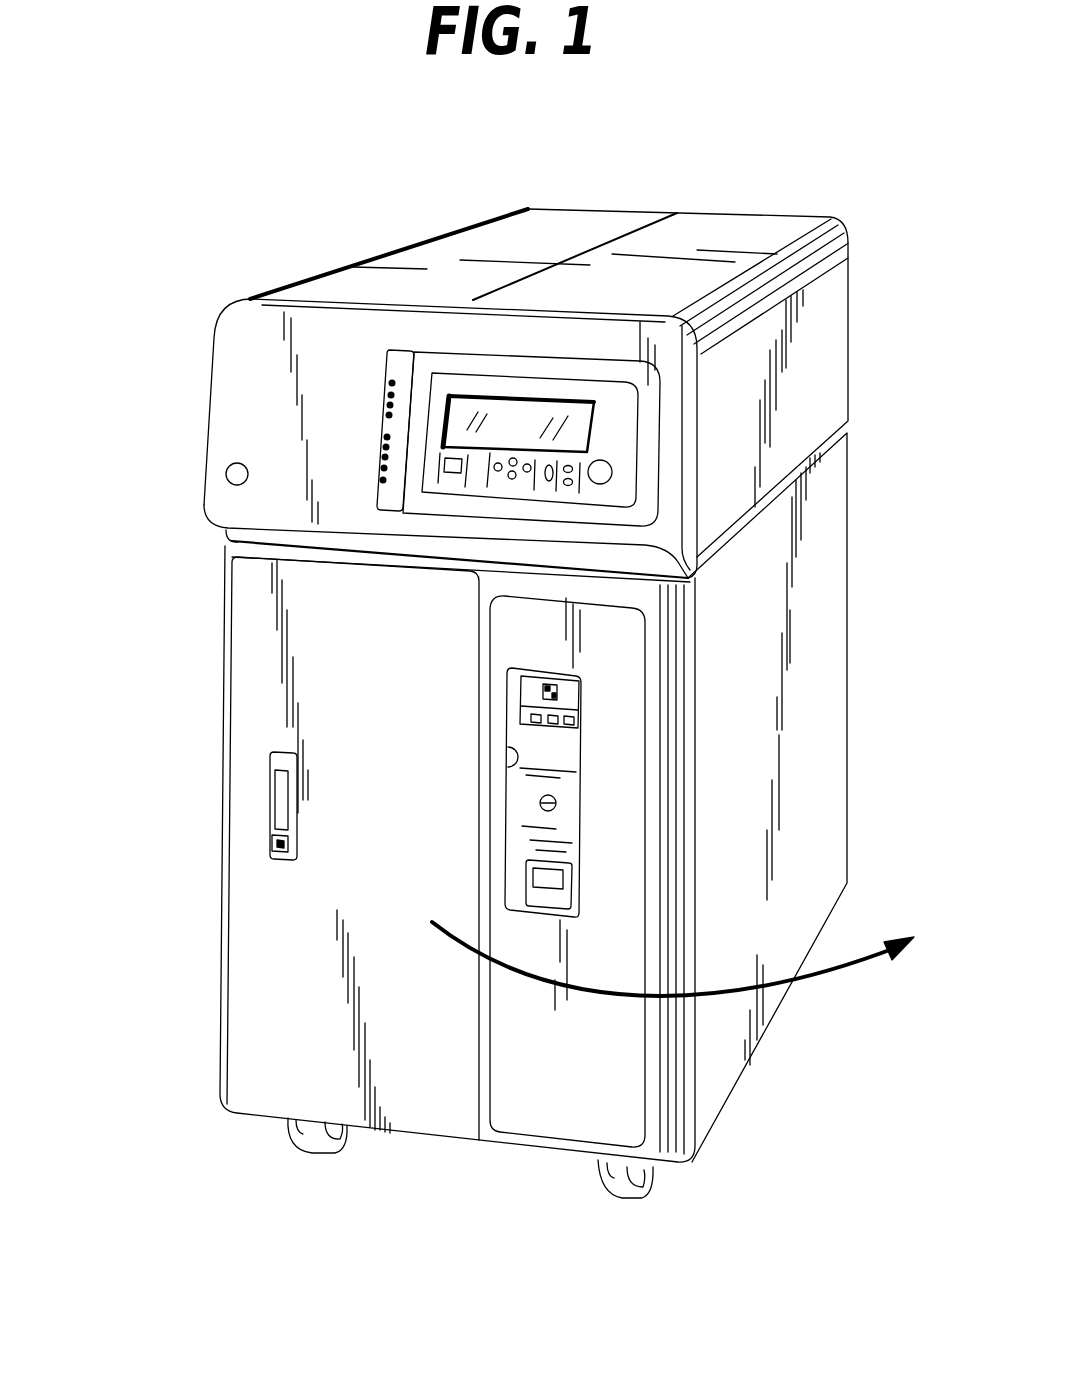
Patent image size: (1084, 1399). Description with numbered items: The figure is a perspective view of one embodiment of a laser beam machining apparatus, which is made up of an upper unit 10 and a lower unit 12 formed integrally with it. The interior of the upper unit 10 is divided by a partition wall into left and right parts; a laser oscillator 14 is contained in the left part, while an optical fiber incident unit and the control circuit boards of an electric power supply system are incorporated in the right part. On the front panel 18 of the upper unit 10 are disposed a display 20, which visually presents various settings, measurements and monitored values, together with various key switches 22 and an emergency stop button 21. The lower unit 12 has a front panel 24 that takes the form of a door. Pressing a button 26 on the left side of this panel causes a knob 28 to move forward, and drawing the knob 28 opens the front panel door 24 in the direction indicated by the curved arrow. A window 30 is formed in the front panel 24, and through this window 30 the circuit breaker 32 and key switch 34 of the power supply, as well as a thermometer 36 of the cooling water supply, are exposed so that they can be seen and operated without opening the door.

The upper unit 10 is at (220, 335).
The lower unit 12 is at (818, 607).
The laser oscillator 14 is at (378, 258).
The front panel 18 is at (676, 421).
The display 20 is at (509, 414).
The emergency stop button 21 is at (226, 474).
The key switches 22 is at (503, 487).
The front panel door 24 is at (240, 631).
The button 26 is at (272, 842).
The knob 28 is at (272, 790).
The window 30 is at (537, 765).
The circuit breaker 32 is at (557, 698).
The key switch 34 is at (558, 803).
The thermometer 36 is at (568, 890).